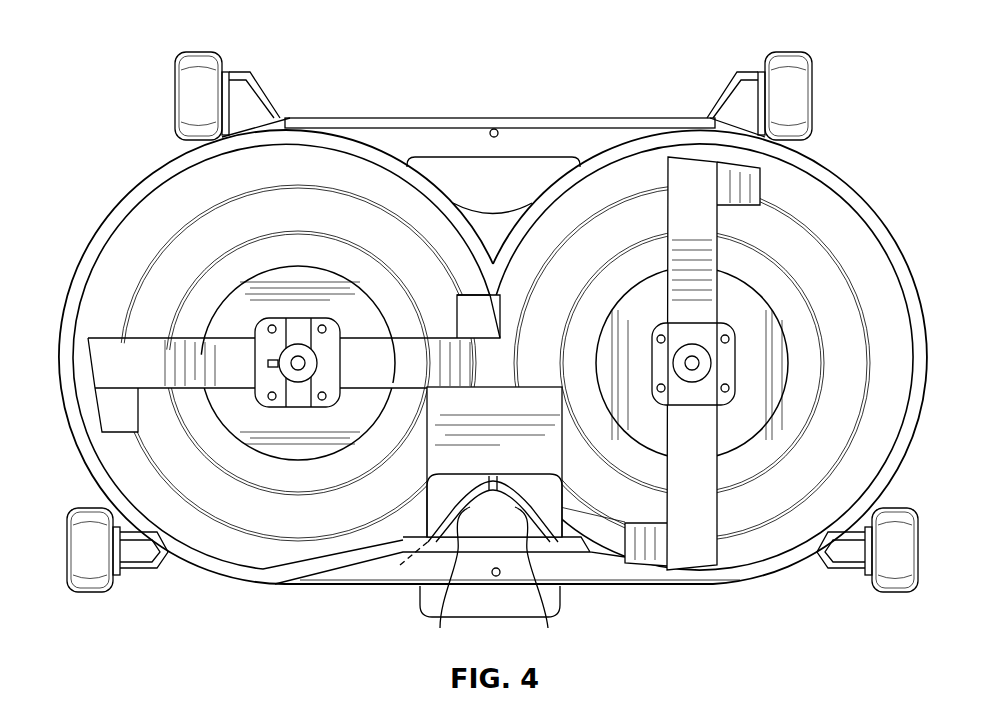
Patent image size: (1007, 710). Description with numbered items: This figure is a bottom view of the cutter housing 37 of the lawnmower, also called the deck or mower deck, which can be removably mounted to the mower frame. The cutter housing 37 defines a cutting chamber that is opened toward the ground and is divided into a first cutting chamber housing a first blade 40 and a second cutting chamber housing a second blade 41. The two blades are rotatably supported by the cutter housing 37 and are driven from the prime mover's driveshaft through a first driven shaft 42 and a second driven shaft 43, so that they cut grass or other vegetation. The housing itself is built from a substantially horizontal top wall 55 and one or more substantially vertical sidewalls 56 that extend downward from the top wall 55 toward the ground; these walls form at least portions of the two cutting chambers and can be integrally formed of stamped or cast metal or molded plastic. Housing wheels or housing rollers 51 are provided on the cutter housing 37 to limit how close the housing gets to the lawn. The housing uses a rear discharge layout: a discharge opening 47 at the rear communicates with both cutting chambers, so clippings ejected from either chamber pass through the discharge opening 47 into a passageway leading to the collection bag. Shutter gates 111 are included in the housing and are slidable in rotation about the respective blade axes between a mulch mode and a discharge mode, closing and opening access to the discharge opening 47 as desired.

The cutter housing 37 is at (476, 114).
The first blade 40 is at (107, 347).
The second blade 41 is at (688, 170).
The first driven shaft 42 is at (305, 367).
The second driven shaft 43 is at (692, 363).
The discharge opening 47 is at (553, 503).
The housing rollers 51 is at (200, 52).
The top wall 55 is at (157, 290).
The sidewall 56 is at (118, 228).
The shutter gate 111 is at (500, 579).